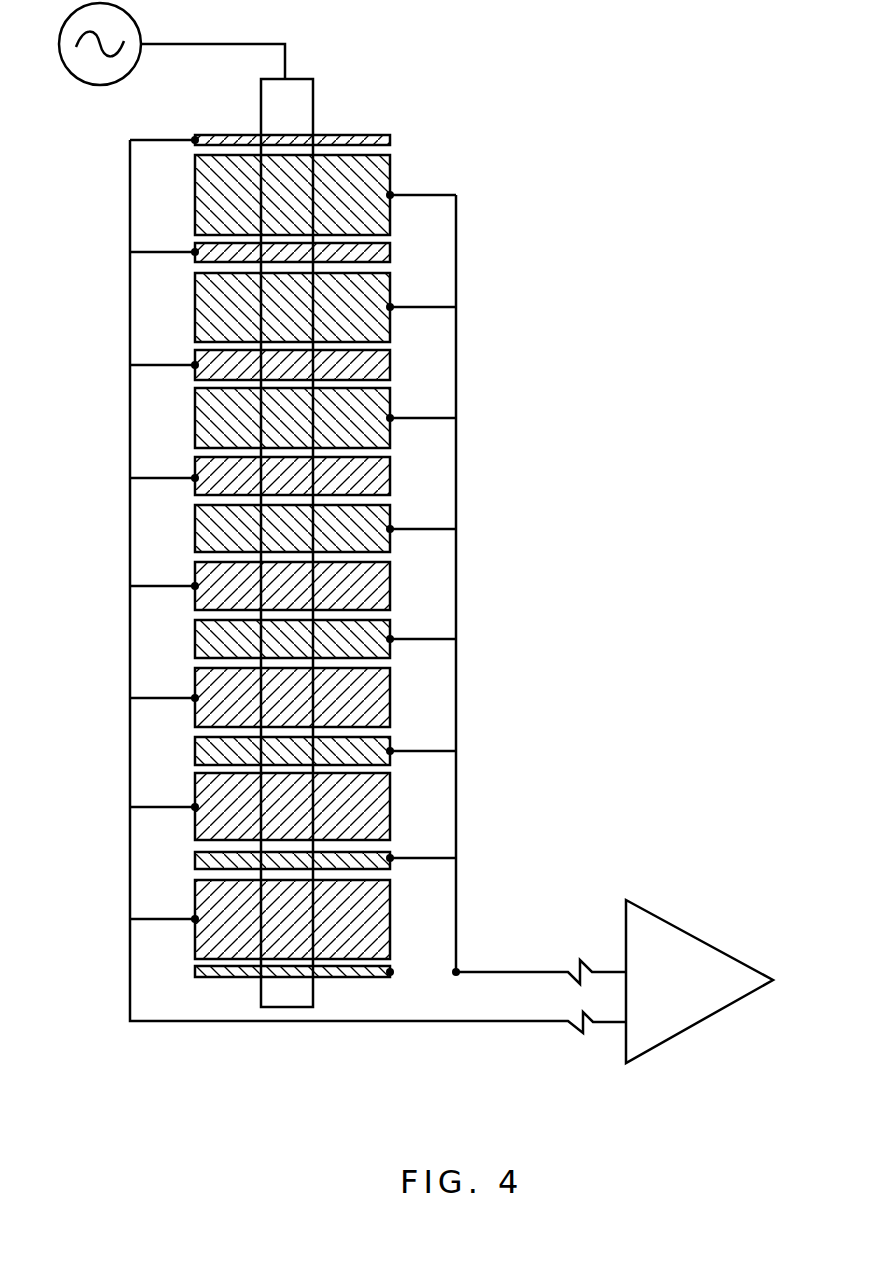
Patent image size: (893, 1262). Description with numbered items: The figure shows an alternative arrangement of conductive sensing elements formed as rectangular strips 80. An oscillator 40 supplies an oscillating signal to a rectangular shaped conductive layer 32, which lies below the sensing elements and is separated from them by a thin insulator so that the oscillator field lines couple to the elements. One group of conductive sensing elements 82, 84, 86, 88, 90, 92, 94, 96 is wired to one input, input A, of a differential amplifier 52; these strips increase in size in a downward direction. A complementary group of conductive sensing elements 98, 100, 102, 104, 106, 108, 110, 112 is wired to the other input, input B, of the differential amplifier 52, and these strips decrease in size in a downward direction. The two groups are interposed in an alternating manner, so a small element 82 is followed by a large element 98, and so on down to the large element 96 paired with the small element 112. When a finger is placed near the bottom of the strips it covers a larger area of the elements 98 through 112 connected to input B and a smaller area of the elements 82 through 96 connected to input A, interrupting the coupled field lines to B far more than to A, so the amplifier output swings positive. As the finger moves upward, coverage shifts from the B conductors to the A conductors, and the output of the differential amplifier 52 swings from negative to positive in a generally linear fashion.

The conductive layer 32 is at (313, 105).
The oscillator 40 is at (75, 80).
The differential amplifier 52 is at (720, 1008).
The rectangular strips 80 is at (481, 98).
The conductive sensing element 82 is at (195, 143).
The conductive sensing element 84 is at (195, 258).
The conductive sensing element 86 is at (195, 372).
The conductive sensing element 88 is at (195, 485).
The conductive sensing element 90 is at (195, 595).
The conductive sensing element 92 is at (195, 710).
The conductive sensing element 94 is at (195, 822).
The conductive sensing element 96 is at (195, 930).
The complementary conductive sensing element 98 is at (389, 205).
The complementary conductive sensing element 100 is at (389, 317).
The complementary conductive sensing element 102 is at (389, 428).
The complementary conductive sensing element 104 is at (389, 539).
The complementary conductive sensing element 106 is at (389, 649).
The complementary conductive sensing element 108 is at (389, 760).
The complementary conductive sensing element 110 is at (389, 866).
The complementary conductive sensing element 112 is at (389, 978).